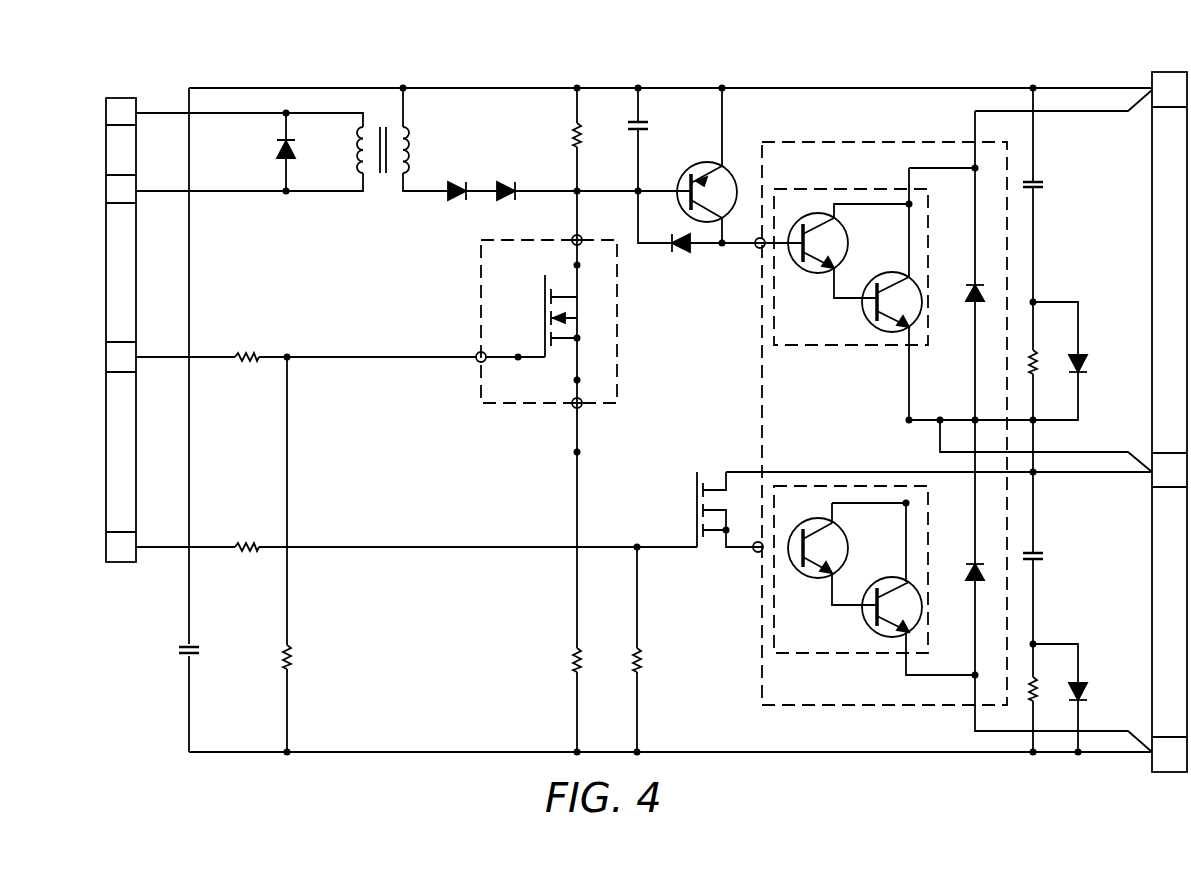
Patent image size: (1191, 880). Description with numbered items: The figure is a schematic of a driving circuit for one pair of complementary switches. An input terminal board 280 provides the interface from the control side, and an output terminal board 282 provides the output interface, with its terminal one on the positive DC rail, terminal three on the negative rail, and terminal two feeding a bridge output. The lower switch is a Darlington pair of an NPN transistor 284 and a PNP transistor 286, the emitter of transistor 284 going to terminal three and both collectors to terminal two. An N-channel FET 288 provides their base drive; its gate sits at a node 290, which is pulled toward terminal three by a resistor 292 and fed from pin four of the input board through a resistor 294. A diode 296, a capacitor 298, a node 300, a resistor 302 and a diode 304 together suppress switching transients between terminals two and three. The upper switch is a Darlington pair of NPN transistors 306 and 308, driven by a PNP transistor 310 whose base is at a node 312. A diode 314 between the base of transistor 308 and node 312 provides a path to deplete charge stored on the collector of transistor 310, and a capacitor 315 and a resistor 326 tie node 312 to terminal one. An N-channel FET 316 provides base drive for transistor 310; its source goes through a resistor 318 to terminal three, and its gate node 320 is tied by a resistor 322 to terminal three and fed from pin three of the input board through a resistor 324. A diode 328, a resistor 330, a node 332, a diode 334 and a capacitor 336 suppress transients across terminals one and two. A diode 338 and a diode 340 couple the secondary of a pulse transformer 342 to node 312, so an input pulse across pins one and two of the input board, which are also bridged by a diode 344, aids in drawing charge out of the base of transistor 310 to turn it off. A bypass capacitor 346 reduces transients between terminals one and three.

The input terminal board 280 is at (106, 405).
The output terminal board 282 is at (1168, 72).
The NPN transistor 284 is at (882, 578).
The PNP transistor 286 is at (810, 577).
The N-channel FET 288 is at (712, 470).
The node 290 is at (636, 544).
The resistor 292 is at (642, 657).
The resistor 294 is at (243, 543).
The diode 296 is at (965, 568).
The capacitor 298 is at (1040, 550).
The node 300 is at (1036, 641).
The resistor 302 is at (1040, 682).
The diode 304 is at (1086, 693).
The NPN transistor 306 is at (888, 272).
The NPN transistor 308 is at (812, 272).
The PNP transistor 310 is at (722, 165).
The node 312 is at (641, 187).
The diode 314 is at (682, 255).
The capacitor 315 is at (648, 124).
The N-channel FET 316 is at (552, 360).
The resistor 318 is at (572, 657).
The node 320 is at (290, 354).
The resistor 322 is at (292, 653).
The resistor 324 is at (246, 352).
The resistor 326 is at (572, 135).
The diode 328 is at (968, 305).
The resistor 330 is at (1040, 350).
The node 332 is at (1037, 300).
The diode 334 is at (1088, 360).
The capacitor 336 is at (1042, 180).
The diode 338 is at (506, 180).
The diode 340 is at (457, 180).
The pulse transformer 342 is at (383, 180).
The diode 344 is at (296, 143).
The bypass capacitor 346 is at (200, 652).